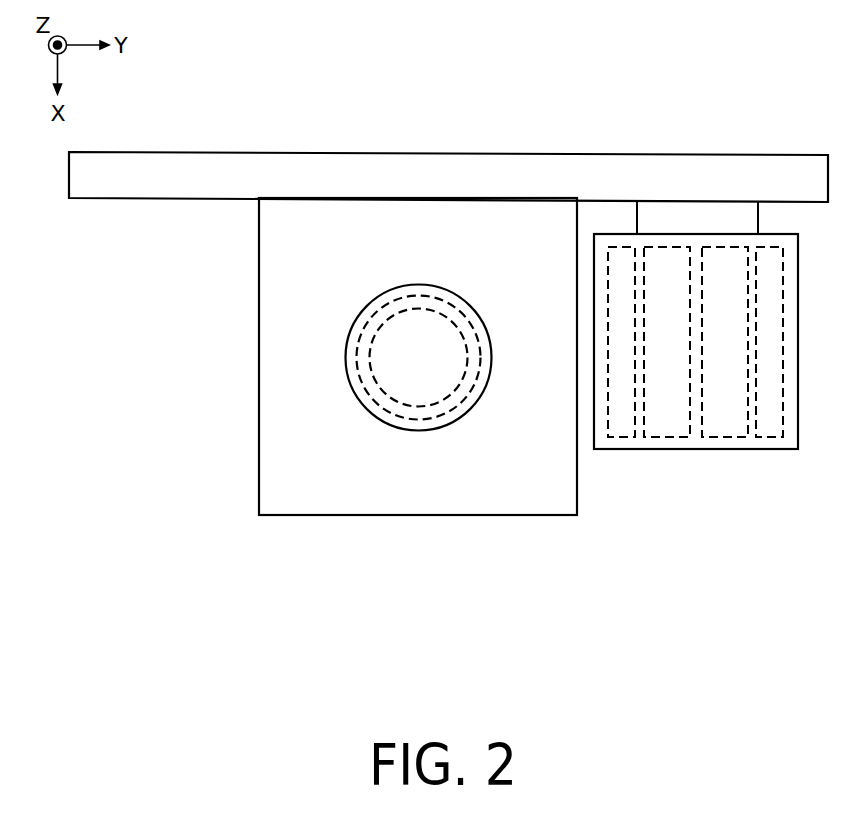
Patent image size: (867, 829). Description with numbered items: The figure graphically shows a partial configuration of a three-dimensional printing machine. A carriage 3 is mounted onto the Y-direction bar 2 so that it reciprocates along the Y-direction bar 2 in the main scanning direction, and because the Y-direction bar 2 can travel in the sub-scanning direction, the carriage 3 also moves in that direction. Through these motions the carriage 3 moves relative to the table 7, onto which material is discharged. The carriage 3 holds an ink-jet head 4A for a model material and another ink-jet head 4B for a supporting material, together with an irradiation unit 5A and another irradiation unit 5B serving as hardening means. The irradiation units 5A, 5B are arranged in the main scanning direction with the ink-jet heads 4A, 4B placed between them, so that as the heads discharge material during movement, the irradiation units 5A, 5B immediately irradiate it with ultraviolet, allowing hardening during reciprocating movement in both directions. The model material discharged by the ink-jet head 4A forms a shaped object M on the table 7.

The Y-direction bar 2 is at (449, 153).
The table 7 is at (259, 294).
The shaped object M is at (343, 355).
The carriage 3 is at (799, 345).
The irradiation unit 5A is at (623, 444).
The ink-jet head 4A is at (668, 444).
The ink-jet head 4B is at (726, 444).
The irradiation unit 5B is at (771, 444).